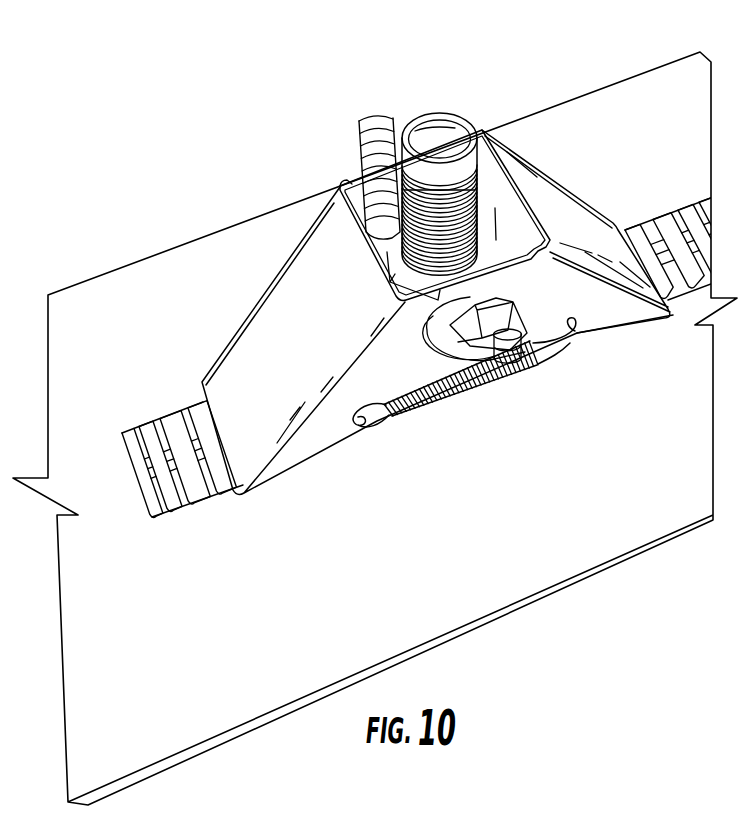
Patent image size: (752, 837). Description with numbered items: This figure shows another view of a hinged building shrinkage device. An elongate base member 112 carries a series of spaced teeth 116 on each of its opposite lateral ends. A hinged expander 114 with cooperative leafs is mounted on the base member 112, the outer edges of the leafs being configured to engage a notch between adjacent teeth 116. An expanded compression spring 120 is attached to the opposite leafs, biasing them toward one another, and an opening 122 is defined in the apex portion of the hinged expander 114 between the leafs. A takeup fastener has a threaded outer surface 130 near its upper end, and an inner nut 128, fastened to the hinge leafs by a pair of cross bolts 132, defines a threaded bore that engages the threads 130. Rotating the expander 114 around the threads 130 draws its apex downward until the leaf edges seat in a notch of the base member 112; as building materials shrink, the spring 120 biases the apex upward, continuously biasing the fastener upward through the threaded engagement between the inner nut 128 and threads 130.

The elongate base member 112 is at (184, 402).
The hinged expander 114 is at (245, 320).
The spaced teeth 116 is at (190, 488).
The expanded compression spring 120 is at (432, 400).
The opening 122 is at (478, 150).
The inner nut 128 is at (482, 200).
The threaded outer surface 130 is at (413, 193).
The cross bolts 132 is at (373, 115).